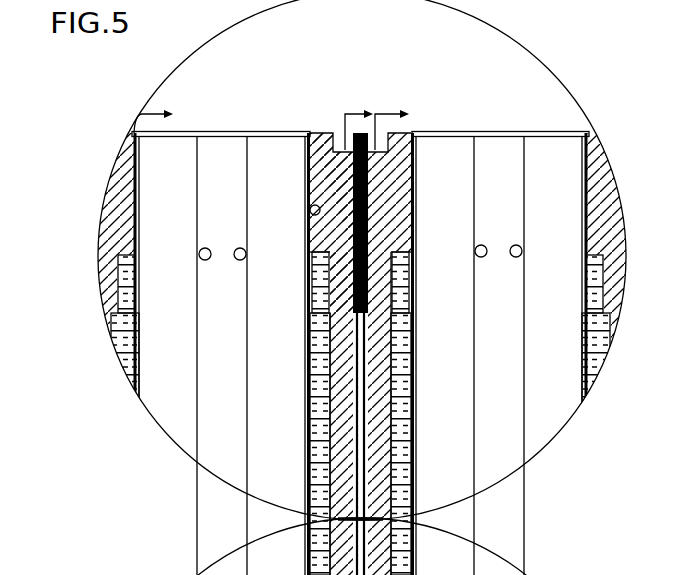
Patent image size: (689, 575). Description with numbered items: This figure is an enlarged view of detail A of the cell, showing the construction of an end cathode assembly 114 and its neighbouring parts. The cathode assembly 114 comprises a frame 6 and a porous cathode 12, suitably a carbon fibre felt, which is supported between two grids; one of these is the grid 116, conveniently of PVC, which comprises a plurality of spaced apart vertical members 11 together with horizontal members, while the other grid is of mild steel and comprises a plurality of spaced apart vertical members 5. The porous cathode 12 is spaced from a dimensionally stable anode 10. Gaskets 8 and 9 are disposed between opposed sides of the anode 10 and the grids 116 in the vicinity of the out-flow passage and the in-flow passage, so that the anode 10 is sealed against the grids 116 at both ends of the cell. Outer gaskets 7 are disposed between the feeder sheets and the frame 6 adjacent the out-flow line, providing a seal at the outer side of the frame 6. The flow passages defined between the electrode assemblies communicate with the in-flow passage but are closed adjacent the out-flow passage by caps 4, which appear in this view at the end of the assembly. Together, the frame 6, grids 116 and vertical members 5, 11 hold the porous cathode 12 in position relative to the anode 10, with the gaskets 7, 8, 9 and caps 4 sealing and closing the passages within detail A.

The cap 4 is at (212, 133).
The vertical member 5 is at (255, 150).
The frame 6 is at (330, 180).
The outer gasket 7 is at (310, 208).
The gasket 8 is at (352, 228).
The gasket 9 is at (352, 267).
The dimensionally stable anode 10 is at (362, 358).
The vertical member 11 is at (404, 398).
The porous cathode 12 is at (405, 466).
The cathode assembly 114 is at (332, 138).
The grid 116 is at (343, 462).
The detail A is at (98, 266).